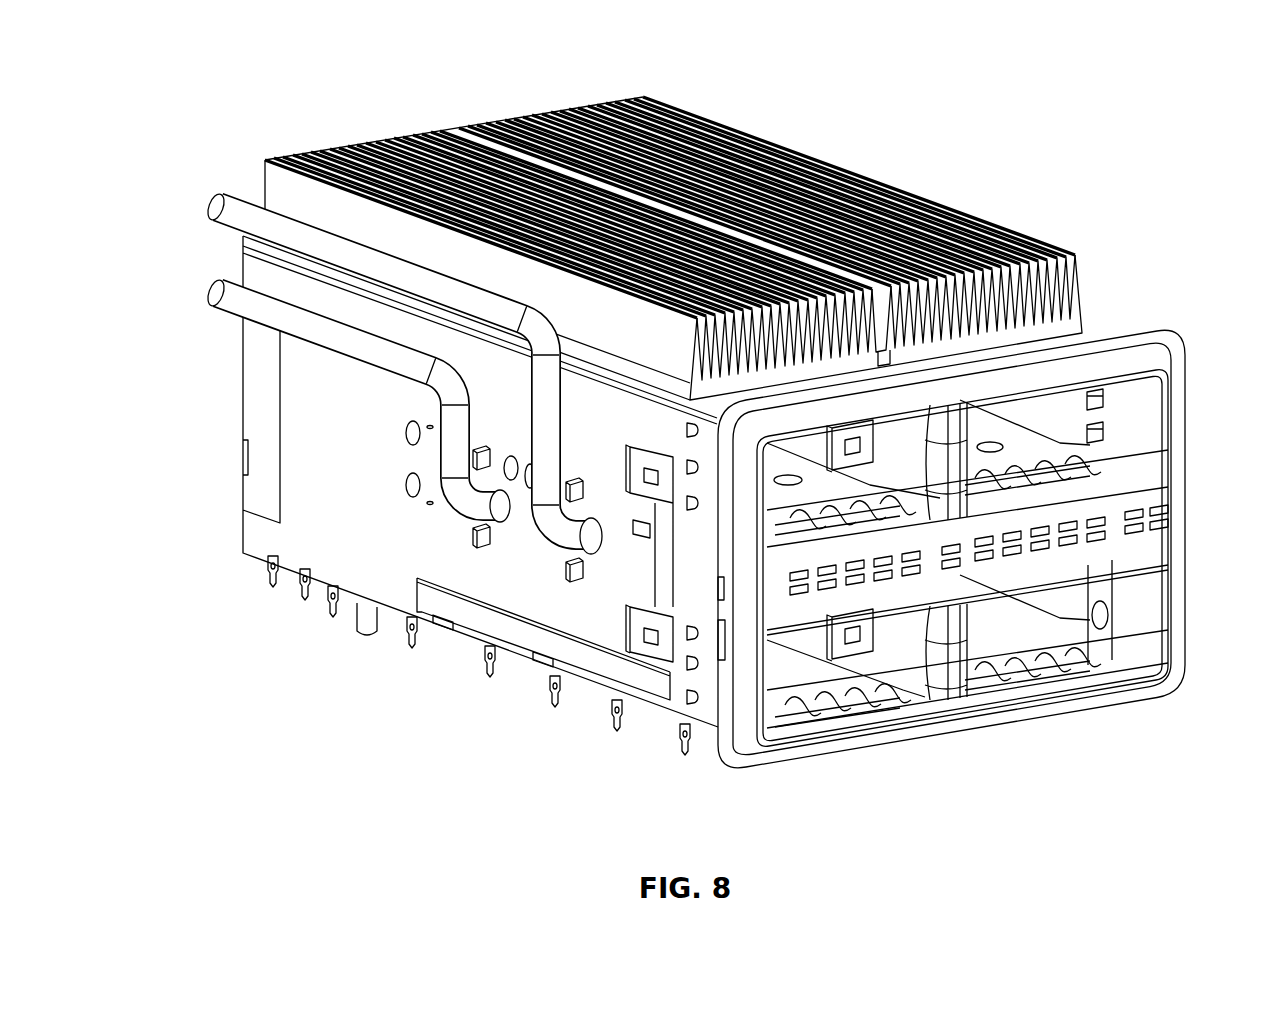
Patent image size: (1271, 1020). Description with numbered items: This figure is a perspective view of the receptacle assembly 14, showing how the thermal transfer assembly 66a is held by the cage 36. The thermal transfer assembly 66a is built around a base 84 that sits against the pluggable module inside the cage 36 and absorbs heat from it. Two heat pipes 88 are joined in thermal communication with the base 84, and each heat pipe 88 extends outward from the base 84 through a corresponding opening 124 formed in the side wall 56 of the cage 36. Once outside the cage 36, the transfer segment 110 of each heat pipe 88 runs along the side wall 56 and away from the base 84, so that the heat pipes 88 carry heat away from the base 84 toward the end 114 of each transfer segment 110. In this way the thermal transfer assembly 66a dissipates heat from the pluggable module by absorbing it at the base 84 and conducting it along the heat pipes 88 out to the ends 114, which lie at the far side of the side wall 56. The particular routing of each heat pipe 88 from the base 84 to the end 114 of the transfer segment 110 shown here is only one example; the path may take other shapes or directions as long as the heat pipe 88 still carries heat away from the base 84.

The receptacle assembly 14 is at (654, 428).
The cage 36 is at (285, 546).
The side wall 56 is at (357, 535).
The thermal transfer assembly 66a is at (594, 561).
The base 84 is at (622, 556).
The heat pipe 88 is at (456, 514).
The transfer segment 110 is at (572, 433).
The end 114 is at (229, 192).
The opening 124 is at (583, 505).